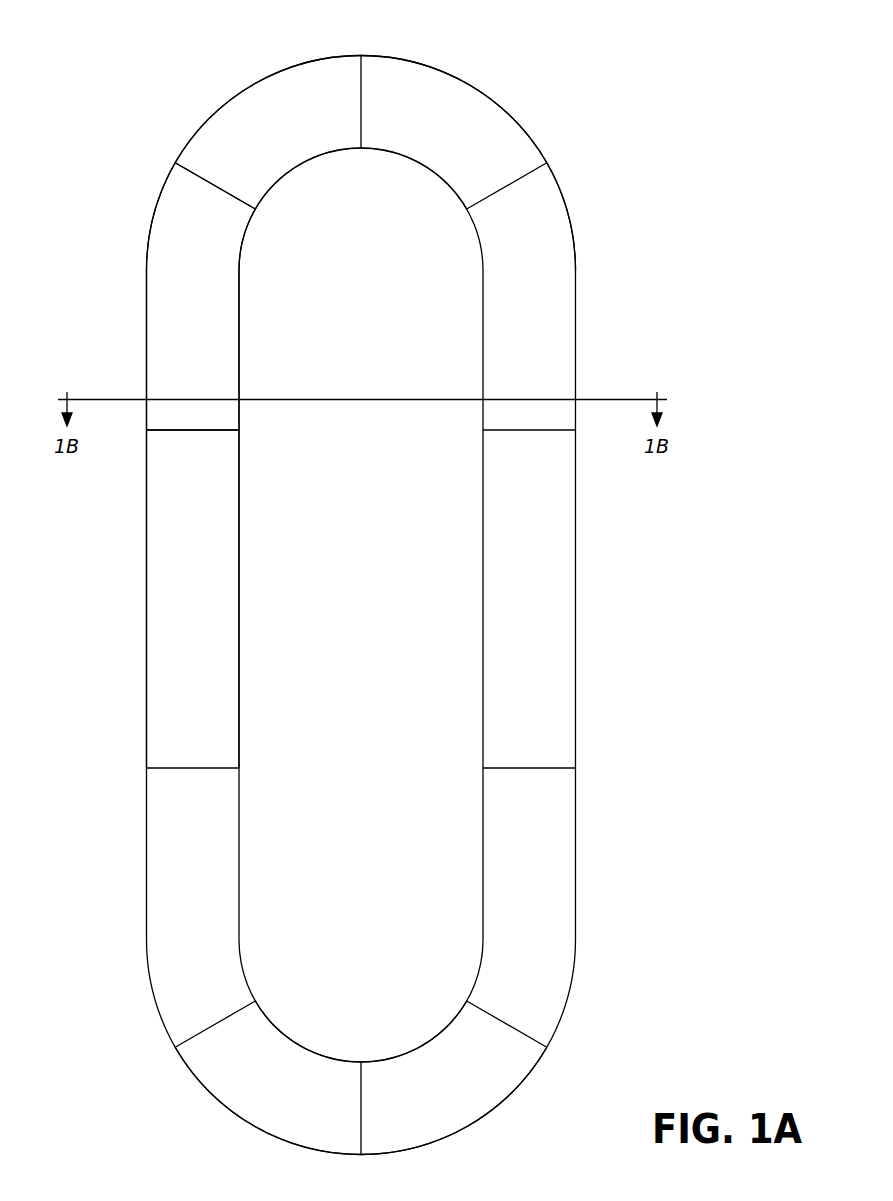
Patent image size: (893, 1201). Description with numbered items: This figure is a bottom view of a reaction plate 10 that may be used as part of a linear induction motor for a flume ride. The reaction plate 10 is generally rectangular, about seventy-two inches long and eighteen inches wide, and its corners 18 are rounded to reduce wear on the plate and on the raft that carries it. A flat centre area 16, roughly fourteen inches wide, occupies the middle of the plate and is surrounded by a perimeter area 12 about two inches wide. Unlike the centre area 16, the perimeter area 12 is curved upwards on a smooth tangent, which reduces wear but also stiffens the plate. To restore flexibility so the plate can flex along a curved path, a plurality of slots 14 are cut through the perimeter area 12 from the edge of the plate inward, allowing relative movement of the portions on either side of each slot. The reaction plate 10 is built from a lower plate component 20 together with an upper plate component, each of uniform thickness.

The reaction plate 10 is at (103, 77).
The perimeter area 12 is at (292, 104).
The slots 14 is at (205, 180).
The centre area 16 is at (280, 560).
The corners 18 is at (478, 1125).
The lower plate component 20 is at (147, 683).